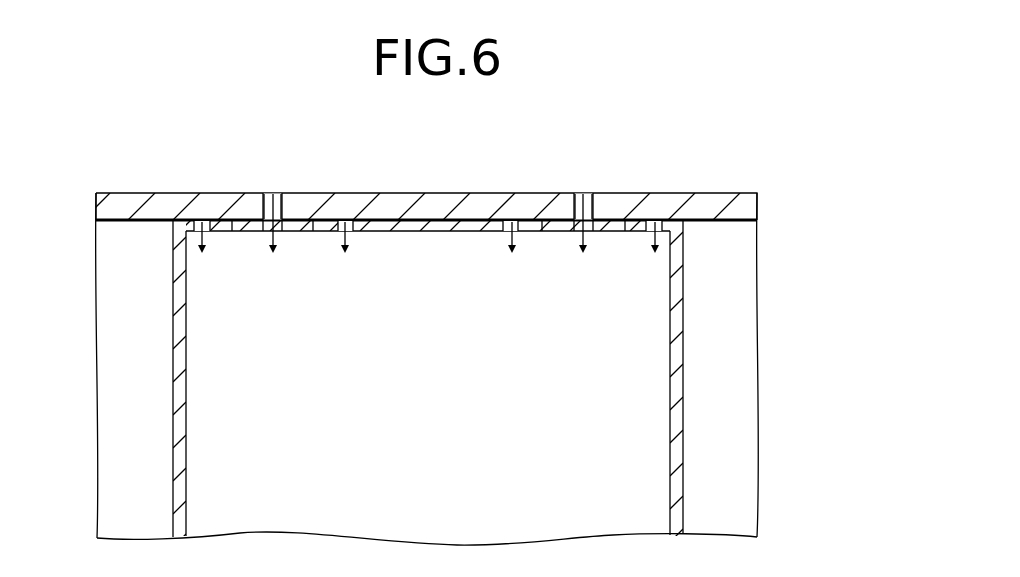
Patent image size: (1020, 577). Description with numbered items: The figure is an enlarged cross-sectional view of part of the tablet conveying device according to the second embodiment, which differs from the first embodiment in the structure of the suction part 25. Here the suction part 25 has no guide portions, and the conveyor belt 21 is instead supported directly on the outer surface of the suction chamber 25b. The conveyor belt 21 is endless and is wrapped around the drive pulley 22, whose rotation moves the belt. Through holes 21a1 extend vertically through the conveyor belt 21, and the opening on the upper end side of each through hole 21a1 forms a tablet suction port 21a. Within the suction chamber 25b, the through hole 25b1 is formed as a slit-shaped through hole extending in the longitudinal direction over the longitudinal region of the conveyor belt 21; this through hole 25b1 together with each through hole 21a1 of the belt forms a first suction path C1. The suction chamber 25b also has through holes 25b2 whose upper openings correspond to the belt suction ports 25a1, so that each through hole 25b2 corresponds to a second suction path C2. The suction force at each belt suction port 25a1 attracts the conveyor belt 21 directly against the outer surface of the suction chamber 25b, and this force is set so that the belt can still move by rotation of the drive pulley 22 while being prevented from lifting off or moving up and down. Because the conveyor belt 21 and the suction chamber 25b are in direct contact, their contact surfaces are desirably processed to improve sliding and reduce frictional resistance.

The conveyor belt 21 is at (118, 193).
The tablet suction port 21a is at (264, 193).
The through hole 21a1 is at (281, 193).
The drive pulley 22 is at (104, 238).
The suction part 25 is at (437, 324).
The belt suction port 25a1 is at (202, 220).
The suction chamber 25b is at (684, 234).
The through hole 25b1 is at (242, 232).
The through hole 25b2 is at (173, 240).
The first suction path C1 is at (272, 255).
The second suction path C2 is at (198, 256).